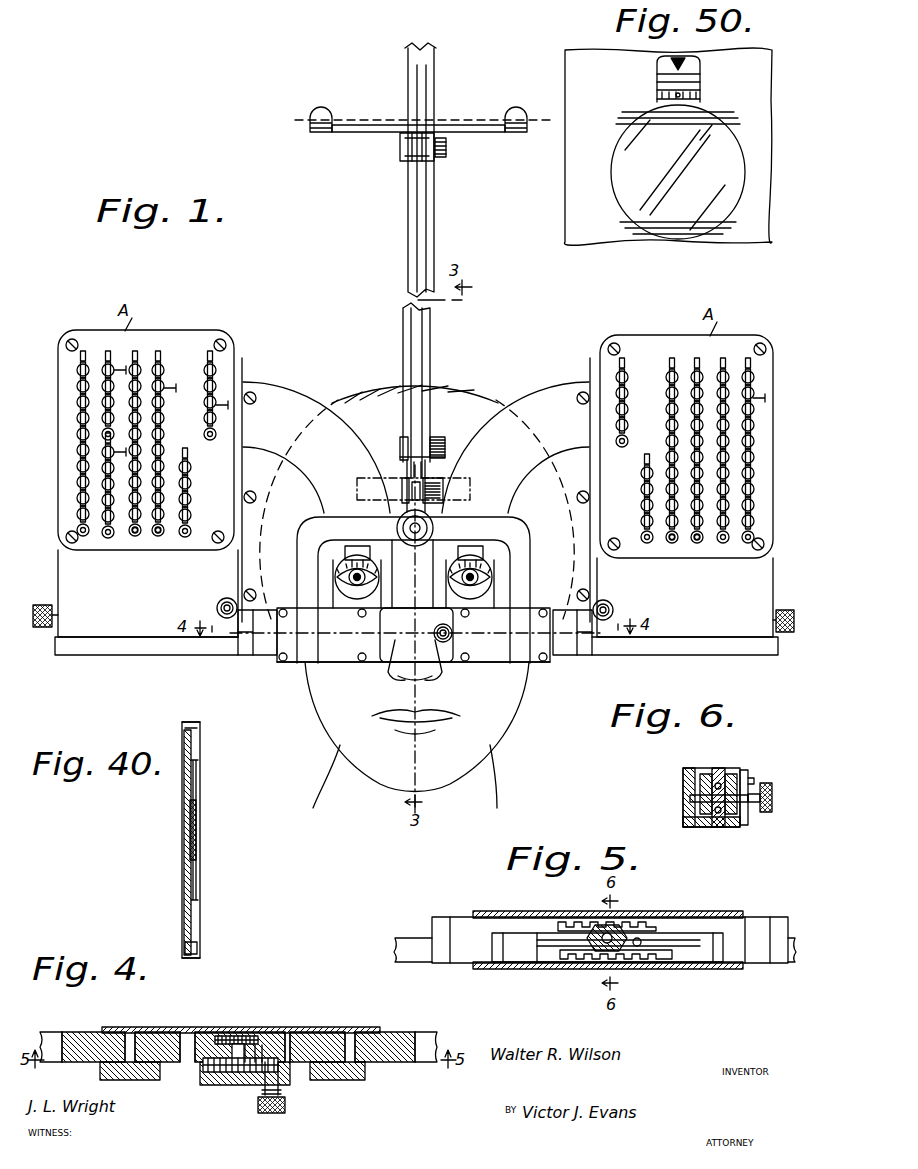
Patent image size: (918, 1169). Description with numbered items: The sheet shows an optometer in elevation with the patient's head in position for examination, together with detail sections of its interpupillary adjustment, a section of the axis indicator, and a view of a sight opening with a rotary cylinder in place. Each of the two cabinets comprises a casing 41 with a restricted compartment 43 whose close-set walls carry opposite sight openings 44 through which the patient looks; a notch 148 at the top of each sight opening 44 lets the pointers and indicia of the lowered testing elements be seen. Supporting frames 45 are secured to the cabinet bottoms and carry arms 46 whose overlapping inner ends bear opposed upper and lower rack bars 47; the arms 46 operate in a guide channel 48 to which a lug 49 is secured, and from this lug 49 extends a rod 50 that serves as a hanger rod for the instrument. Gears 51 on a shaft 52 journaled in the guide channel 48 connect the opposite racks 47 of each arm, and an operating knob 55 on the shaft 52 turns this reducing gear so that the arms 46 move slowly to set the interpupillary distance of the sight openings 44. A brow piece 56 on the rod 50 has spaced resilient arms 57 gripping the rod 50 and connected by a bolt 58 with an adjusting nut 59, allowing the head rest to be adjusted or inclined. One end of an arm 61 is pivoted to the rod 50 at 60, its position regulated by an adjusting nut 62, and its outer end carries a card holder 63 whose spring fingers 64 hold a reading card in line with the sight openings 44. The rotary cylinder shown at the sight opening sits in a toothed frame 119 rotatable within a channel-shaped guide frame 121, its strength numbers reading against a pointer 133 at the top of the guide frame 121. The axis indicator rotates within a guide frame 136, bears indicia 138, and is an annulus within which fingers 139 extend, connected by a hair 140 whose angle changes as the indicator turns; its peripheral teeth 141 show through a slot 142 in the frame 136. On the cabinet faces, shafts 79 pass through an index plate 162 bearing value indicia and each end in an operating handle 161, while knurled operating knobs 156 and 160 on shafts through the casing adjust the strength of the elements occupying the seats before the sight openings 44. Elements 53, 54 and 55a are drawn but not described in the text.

In FIG. 1, the casing 41 is at (238, 366).
In FIG. 1, the restricted compartment 43 is at (336, 600).
In FIG. 50, the restricted compartment 43 is at (600, 236).
In FIG. 1, the sight openings 44 is at (476, 600).
In FIG. 50, the sight openings 44 is at (742, 140).
In FIG. 1, the supporting frames 45 is at (158, 648).
In FIG. 5, the supporting frames 45 is at (406, 964).
In FIG. 1, the arms 46 is at (262, 650).
In FIG. 4, the arms 46 is at (72, 1035).
In FIG. 5, the arms 46 is at (457, 918).
In FIG. 6, the arms 46 is at (693, 770).
In FIG. 4, the rack bars 47 is at (300, 1036).
In FIG. 5, the rack bars 47 is at (578, 921).
In FIG. 6, the rack bars 47 is at (682, 771).
In FIG. 1, the guide channel 48 is at (500, 660).
In FIG. 4, the guide channel 48 is at (172, 1027).
In FIG. 5, the guide channel 48 is at (698, 912).
In FIG. 6, the guide channel 48 is at (716, 768).
In FIG. 1, the lug 49 is at (503, 541).
In FIG. 4, the lug 49 is at (155, 1072).
In FIG. 6, the lug 49 is at (749, 772).
In FIG. 1, the rod 50 is at (436, 213).
In FIG. 4, the gears 51 is at (262, 1034).
In FIG. 5, the gears 51 is at (617, 946).
In FIG. 6, the gears 51 is at (700, 810).
In FIG. 4, the shaft 52 is at (238, 1034).
In FIG. 5, the shaft 52 is at (590, 947).
In FIG. 6, the shaft 52 is at (690, 798).
In FIG. 4, the shaft 53 is at (245, 1085).
In FIG. 4, the sleeve 54 is at (285, 1085).
In FIG. 1, the operating knob 55 is at (434, 636).
In FIG. 4, the operating knob 55 is at (248, 1085).
In FIG. 5, the operating knob 55 is at (640, 944).
In FIG. 1, the knurled knob 55a is at (434, 629).
In FIG. 4, the knurled knob 55a is at (270, 1113).
In FIG. 6, the knurled knob 55a is at (766, 812).
In FIG. 1, the brow piece 56 is at (450, 483).
In FIG. 1, the resilient arms 57 is at (412, 486).
In FIG. 1, the bolt 58 is at (404, 481).
In FIG. 1, the adjusting nut 59 is at (446, 496).
In FIG. 1, the pivot 60 is at (430, 440).
In FIG. 1, the arm 61 is at (408, 318).
In FIG. 1, the adjusting nut 62 is at (446, 442).
In FIG. 1, the card holder 63 is at (472, 132).
In FIG. 1, the spring fingers 64 is at (322, 113).
In FIG. 1, the shafts 79 is at (182, 540).
In FIG. 50, the frame 119 is at (672, 103).
In FIG. 50, the guide frame 121 is at (658, 84).
In FIG. 50, the pointer 133 is at (658, 71).
In FIG. 40, the guide frame 136 is at (200, 725).
In FIG. 40, the indicia 138 is at (198, 756).
In FIG. 40, the fingers 139 is at (197, 789).
In FIG. 40, the hair 140 is at (198, 856).
In FIG. 40, the teeth 141 is at (198, 944).
In FIG. 40, the slot 142 is at (200, 956).
In FIG. 1, the notch 148 is at (345, 548).
In FIG. 50, the notch 148 is at (701, 75).
In FIG. 1, the operating knob 156 is at (216, 605).
In FIG. 1, the operating knob 160 is at (44, 630).
In FIG. 1, the operating handle 161 is at (150, 390).
In FIG. 1, the index plate 162 is at (126, 548).